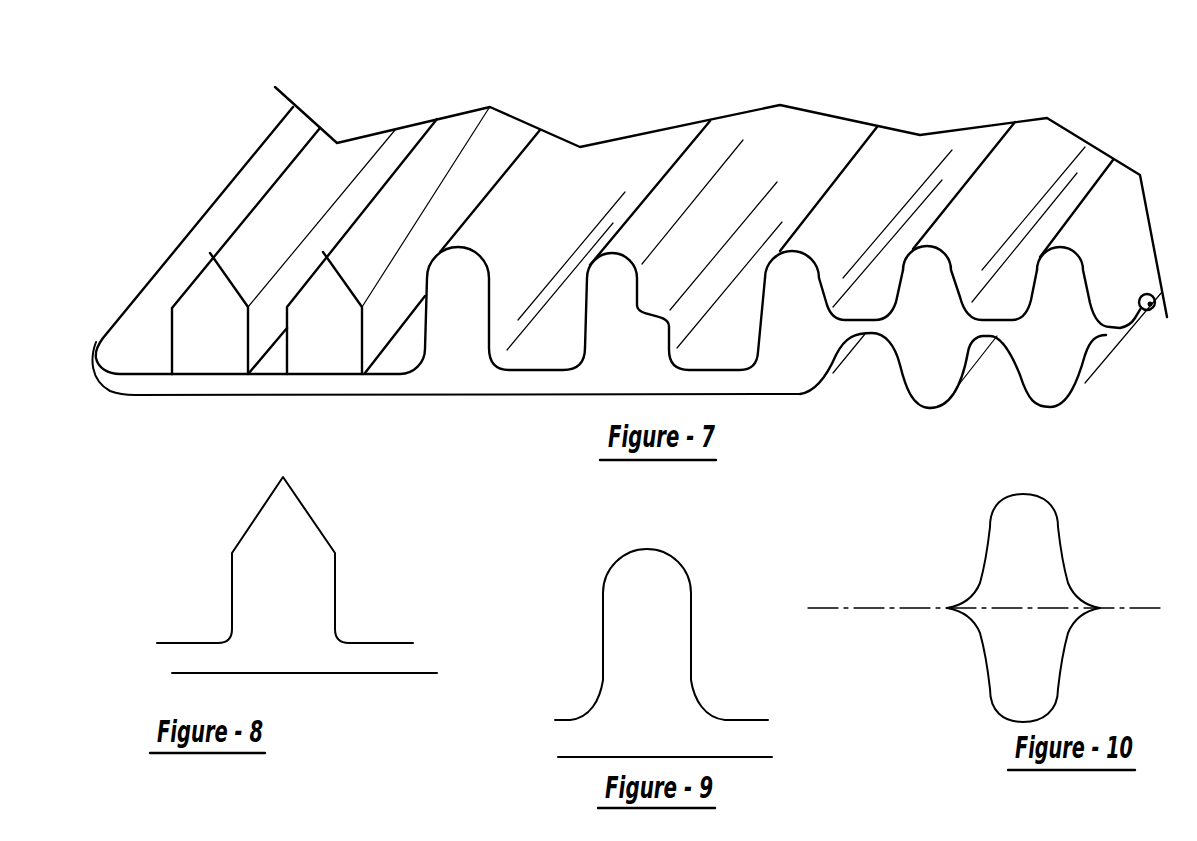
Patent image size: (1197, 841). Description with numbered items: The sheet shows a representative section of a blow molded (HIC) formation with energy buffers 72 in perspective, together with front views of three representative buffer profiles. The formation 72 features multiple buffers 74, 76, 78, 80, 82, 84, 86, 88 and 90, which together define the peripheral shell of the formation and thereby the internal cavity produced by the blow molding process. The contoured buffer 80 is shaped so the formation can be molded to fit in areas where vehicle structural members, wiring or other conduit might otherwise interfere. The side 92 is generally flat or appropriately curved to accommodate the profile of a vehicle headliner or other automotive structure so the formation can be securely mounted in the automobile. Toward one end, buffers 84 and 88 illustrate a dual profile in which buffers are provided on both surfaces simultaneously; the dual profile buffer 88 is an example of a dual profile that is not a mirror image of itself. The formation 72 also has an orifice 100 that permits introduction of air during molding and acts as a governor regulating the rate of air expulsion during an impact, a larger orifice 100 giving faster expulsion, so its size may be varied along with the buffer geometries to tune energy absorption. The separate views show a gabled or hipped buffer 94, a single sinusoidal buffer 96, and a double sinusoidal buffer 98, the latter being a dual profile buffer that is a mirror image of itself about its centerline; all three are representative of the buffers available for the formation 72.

In FIG. 7, the blow molded (HIC) formation with energy buffers 72 is at (146, 275).
In FIG. 7, the buffer 74 is at (222, 270).
In FIG. 7, the buffer 76 is at (339, 268).
In FIG. 7, the buffer 78 is at (489, 270).
In FIG. 7, the contoured buffer 80 is at (640, 282).
In FIG. 7, the buffer 82 is at (800, 250).
In FIG. 7, the dual profile buffer 84 is at (951, 258).
In FIG. 7, the buffer 86 is at (1084, 262).
In FIG. 7, the dual profile buffer 88 is at (903, 387).
In FIG. 7, the buffer 90 is at (1045, 403).
In FIG. 7, the side 92 is at (357, 396).
In FIG. 8, the gabled or hipped buffer 94 is at (266, 505).
In FIG. 9, the sinusoidal buffer 96 is at (673, 560).
In FIG. 10, the double sinusoidal buffer 98 is at (1055, 503).
In FIG. 7, the orifice 100 is at (1152, 318).